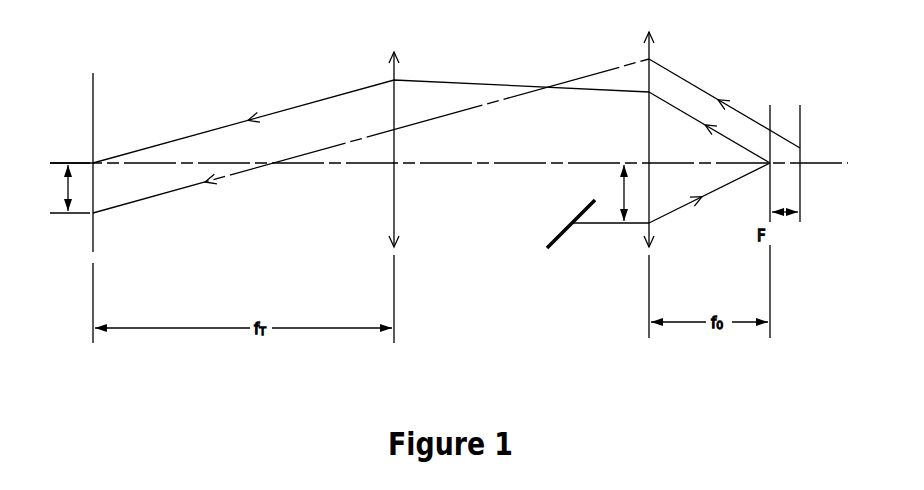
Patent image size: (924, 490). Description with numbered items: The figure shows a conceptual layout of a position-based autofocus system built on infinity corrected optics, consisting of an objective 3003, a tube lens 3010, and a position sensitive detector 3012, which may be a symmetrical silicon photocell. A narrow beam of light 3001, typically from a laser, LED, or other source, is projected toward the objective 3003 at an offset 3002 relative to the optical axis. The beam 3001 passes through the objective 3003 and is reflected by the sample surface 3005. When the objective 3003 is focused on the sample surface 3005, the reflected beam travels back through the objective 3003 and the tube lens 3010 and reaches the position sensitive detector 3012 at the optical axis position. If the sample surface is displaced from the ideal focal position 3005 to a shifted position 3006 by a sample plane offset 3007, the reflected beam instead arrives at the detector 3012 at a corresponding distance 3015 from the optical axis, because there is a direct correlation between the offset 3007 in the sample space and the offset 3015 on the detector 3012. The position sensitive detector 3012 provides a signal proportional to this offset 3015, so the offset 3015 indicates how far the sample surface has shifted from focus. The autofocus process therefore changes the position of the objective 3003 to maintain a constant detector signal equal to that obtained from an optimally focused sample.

The narrow beam of light 3001 is at (572, 223).
The offset 3002 is at (620, 186).
The objective 3003 is at (652, 48).
The sample surface 3005 is at (773, 110).
The position 3006 is at (803, 118).
The offset 3007 is at (784, 216).
The tube lens 3010 is at (397, 72).
The position sensitive detector 3012 is at (96, 86).
The offset 3015 is at (66, 190).